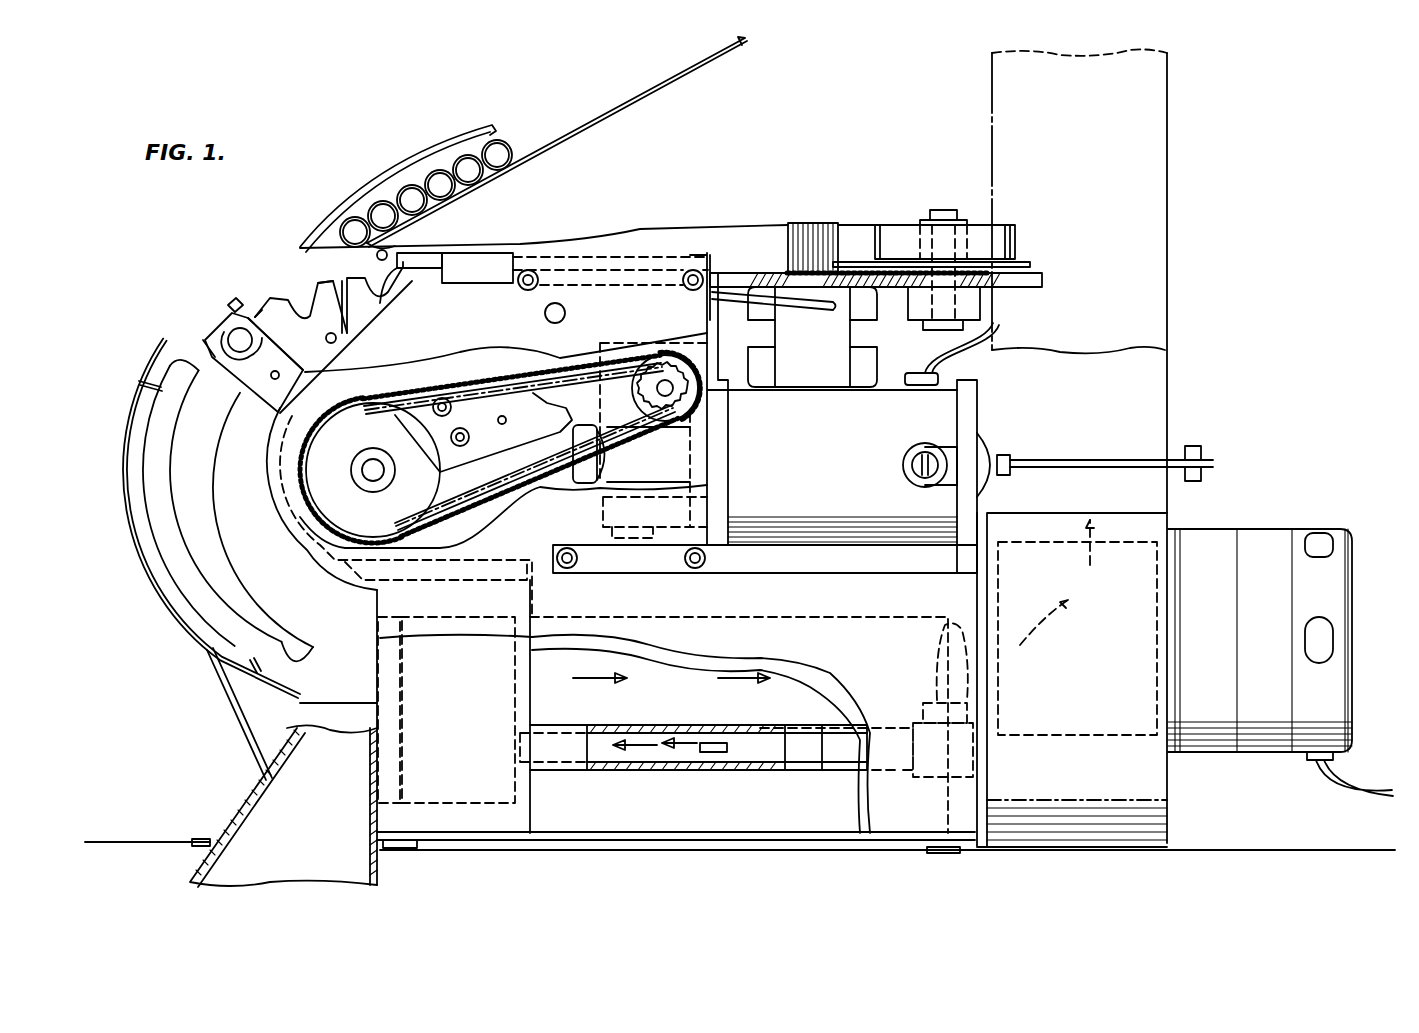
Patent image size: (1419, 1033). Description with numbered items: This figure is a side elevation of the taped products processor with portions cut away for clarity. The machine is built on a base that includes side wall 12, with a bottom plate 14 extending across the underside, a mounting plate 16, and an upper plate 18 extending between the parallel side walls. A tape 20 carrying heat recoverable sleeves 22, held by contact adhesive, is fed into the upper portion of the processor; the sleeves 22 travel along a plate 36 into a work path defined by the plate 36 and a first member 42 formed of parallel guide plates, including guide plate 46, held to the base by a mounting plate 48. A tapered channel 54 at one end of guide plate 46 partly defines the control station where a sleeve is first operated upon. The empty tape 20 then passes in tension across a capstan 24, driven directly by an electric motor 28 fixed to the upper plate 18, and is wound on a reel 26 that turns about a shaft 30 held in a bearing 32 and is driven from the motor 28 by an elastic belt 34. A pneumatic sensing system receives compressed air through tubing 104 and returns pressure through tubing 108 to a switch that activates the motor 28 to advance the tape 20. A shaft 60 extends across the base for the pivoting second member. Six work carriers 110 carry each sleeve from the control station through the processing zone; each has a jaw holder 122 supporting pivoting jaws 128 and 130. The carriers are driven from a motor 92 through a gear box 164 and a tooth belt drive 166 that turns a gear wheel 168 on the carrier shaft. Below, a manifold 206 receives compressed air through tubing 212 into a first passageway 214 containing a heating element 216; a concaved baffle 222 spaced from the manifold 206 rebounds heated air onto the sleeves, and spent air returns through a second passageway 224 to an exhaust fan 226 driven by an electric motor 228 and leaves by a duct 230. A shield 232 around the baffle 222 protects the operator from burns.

The side wall 12 is at (616, 420).
The bottom plate 14 is at (812, 835).
The mounting plate 16 is at (820, 562).
The upper plate 18 is at (1045, 283).
The tape 20 is at (645, 93).
The heat recoverable sleeves 22 is at (507, 143).
The capstan 24 is at (817, 225).
The reel 26 is at (1012, 228).
The electric motor 28 is at (823, 367).
The shaft 30 is at (945, 210).
The bearing 32 is at (963, 305).
The elastic belt 34 is at (847, 270).
The plate 36 is at (385, 245).
The first member 42 is at (209, 328).
The guide plate 46 is at (257, 310).
The mounting plate 48 is at (500, 265).
The tapered channel 54 is at (227, 332).
The shaft 60 is at (567, 313).
The motor 92 is at (943, 423).
The tubing 104 is at (808, 305).
The tubing 108 is at (411, 170).
The work carriers 110 is at (235, 387).
The jaw holder 122 is at (330, 338).
The jaw 128 is at (270, 270).
The jaw 130 is at (333, 280).
The gear box 164 is at (630, 466).
The tooth belt drive 166 is at (465, 497).
The gear wheel 168 is at (338, 490).
The manifold 206 is at (345, 615).
The tubing 212 is at (935, 677).
The first passageway 214 is at (695, 750).
The heating element 216 is at (718, 757).
The concaved baffle 222 is at (188, 585).
The second passageway 224 is at (690, 675).
The exhaust fan 226 is at (1090, 735).
The electric motor 228 is at (1222, 535).
The duct 230 is at (1160, 432).
The shield 232 is at (143, 565).